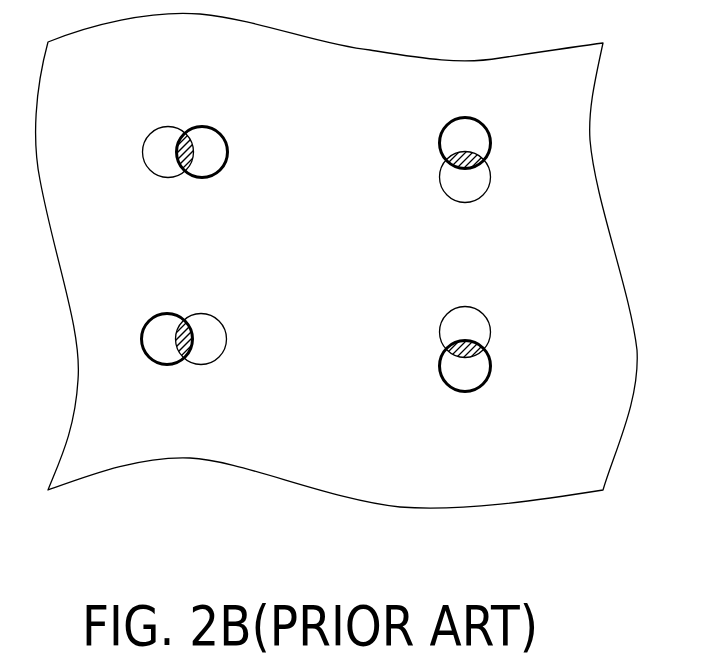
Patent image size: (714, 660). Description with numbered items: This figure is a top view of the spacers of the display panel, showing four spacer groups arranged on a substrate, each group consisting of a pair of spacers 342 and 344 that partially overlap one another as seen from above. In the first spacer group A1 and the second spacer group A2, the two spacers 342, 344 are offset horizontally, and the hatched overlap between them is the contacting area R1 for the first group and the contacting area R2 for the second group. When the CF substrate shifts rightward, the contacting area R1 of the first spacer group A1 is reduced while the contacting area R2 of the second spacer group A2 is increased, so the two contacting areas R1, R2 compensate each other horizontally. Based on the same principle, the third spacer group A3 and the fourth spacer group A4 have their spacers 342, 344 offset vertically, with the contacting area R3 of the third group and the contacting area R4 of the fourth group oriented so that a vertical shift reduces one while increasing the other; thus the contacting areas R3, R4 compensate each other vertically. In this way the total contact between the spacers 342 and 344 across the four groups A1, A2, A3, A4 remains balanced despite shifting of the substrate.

The spacer 342 is at (227, 140).
The spacer 344 is at (160, 177).
The contacting area R1 is at (183, 128).
The contacting area R2 is at (190, 318).
The contacting area R3 is at (448, 163).
The contacting area R4 is at (450, 347).
The first spacer group A1 is at (138, 216).
The second spacer group A2 is at (124, 384).
The third spacer group A3 is at (503, 238).
The fourth spacer group A4 is at (502, 424).